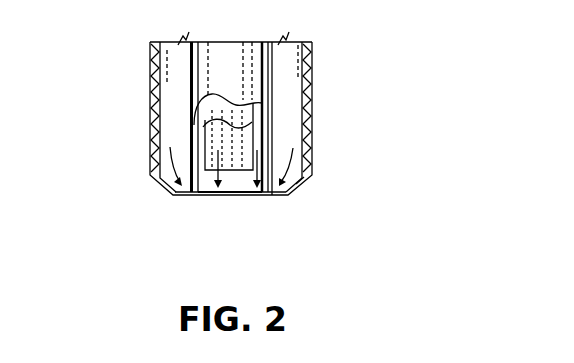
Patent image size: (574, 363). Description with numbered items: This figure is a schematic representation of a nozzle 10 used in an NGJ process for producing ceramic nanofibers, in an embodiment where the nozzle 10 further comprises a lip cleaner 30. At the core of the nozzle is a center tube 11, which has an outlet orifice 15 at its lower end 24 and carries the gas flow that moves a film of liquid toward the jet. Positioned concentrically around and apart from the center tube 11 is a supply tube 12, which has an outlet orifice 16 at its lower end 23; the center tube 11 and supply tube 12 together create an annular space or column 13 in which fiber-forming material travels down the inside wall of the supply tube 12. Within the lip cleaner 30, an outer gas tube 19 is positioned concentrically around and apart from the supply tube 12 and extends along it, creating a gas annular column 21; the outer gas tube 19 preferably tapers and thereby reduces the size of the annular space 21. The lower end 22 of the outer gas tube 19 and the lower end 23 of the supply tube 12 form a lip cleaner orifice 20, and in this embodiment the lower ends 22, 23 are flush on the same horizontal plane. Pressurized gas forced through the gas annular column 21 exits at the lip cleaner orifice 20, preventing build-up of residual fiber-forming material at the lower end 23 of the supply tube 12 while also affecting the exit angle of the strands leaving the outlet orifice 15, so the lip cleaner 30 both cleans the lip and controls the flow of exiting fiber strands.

The nozzle 10 is at (115, 74).
The center tube 11 is at (270, 110).
The supply tube 12 is at (278, 131).
The annular space or column 13 is at (204, 123).
The outlet orifice 15 is at (268, 165).
The outlet orifice 16 is at (210, 190).
The outer gas tube 19 is at (308, 78).
The lip cleaner orifice 20 is at (273, 197).
The gas annular column 21 is at (288, 63).
The lower end of outer gas tube 22 is at (283, 195).
The lower end of supply tube 23 is at (195, 197).
The lower end of center tube 24 is at (248, 188).
The lip cleaner 30 is at (146, 113).